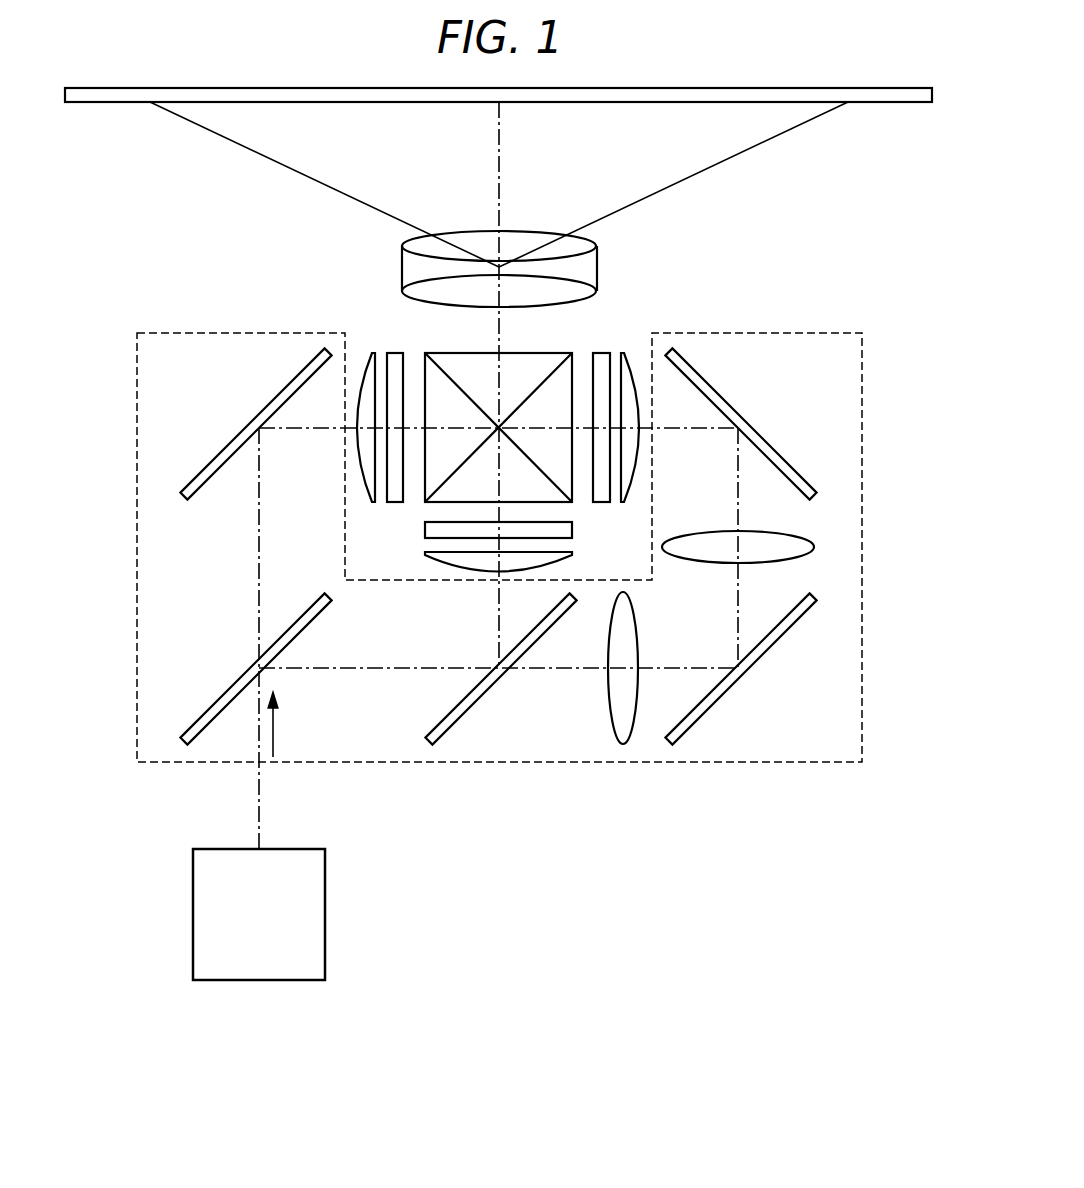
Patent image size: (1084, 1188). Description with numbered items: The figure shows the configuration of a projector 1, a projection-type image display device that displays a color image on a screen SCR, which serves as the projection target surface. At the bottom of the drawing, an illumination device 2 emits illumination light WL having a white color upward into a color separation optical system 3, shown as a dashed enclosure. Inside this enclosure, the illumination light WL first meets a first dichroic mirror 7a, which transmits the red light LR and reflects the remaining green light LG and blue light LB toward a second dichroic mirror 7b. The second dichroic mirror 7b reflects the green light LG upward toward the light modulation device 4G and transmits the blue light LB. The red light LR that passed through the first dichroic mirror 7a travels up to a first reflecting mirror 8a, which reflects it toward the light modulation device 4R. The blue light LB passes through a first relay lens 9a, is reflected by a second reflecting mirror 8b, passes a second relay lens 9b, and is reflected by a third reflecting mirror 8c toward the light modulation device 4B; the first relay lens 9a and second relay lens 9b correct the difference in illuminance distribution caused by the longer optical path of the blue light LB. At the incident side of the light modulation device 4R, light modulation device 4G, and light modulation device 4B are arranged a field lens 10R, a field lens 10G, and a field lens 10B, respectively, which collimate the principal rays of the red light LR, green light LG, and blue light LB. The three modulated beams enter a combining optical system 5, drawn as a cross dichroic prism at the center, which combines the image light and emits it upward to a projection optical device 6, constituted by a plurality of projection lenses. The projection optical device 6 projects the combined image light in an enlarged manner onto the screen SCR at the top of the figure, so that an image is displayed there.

The projector 1 is at (863, 318).
The illumination device 2 is at (325, 950).
The color separation optical system 3 is at (137, 487).
The light modulation device 4R is at (397, 353).
The light modulation device 4G is at (430, 531).
The light modulation device 4B is at (602, 353).
The combining optical system 5 is at (523, 362).
The projection optical device 6 is at (478, 242).
The first dichroic mirror 7a is at (218, 698).
The second dichroic mirror 7b is at (475, 702).
The first reflecting mirror 8a is at (230, 443).
The second reflecting mirror 8b is at (767, 650).
The third reflecting mirror 8c is at (770, 447).
The first relay lens 9a is at (607, 688).
The second relay lens 9b is at (803, 538).
The field lens 10R is at (372, 353).
The field lens 10G is at (430, 558).
The field lens 10B is at (623, 353).
The screen SCR is at (898, 102).
The illumination light WL is at (273, 733).
The red light LR is at (258, 571).
The green light LG is at (497, 620).
The blue light LB is at (735, 610).